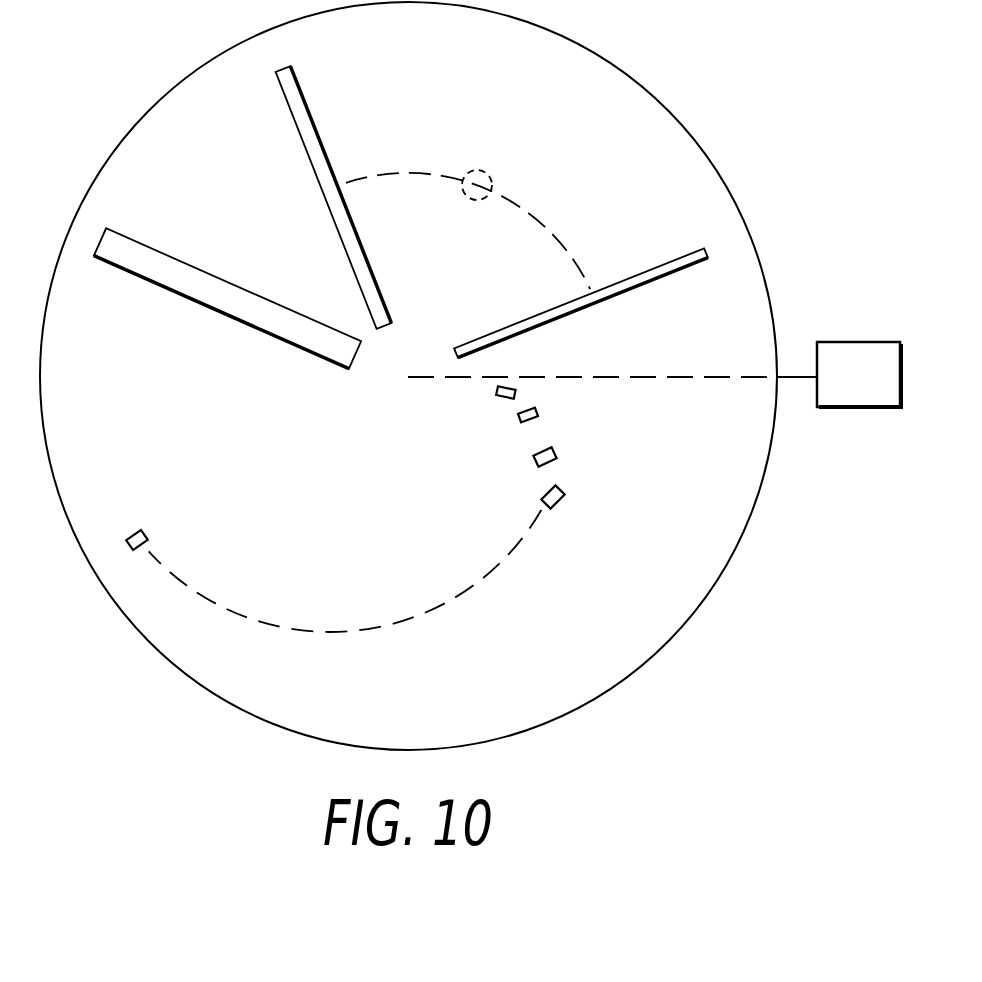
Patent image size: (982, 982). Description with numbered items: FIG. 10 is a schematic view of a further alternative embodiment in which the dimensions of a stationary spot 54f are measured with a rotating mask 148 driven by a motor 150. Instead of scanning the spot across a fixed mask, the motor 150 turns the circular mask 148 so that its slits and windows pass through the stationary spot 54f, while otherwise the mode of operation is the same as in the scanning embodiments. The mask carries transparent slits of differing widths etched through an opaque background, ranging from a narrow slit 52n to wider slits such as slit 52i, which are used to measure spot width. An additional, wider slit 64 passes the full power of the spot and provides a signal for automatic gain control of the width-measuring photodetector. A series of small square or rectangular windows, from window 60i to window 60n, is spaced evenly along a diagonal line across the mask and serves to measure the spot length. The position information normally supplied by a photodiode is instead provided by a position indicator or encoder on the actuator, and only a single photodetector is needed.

The rotating mask 148 is at (715, 583).
The motor 150 is at (866, 407).
The slit 52i is at (297, 117).
The slit 52n is at (668, 262).
The additional slit 64 is at (237, 300).
The stationary spot 54f is at (479, 170).
The window 60i is at (515, 390).
The window 60n is at (135, 530).